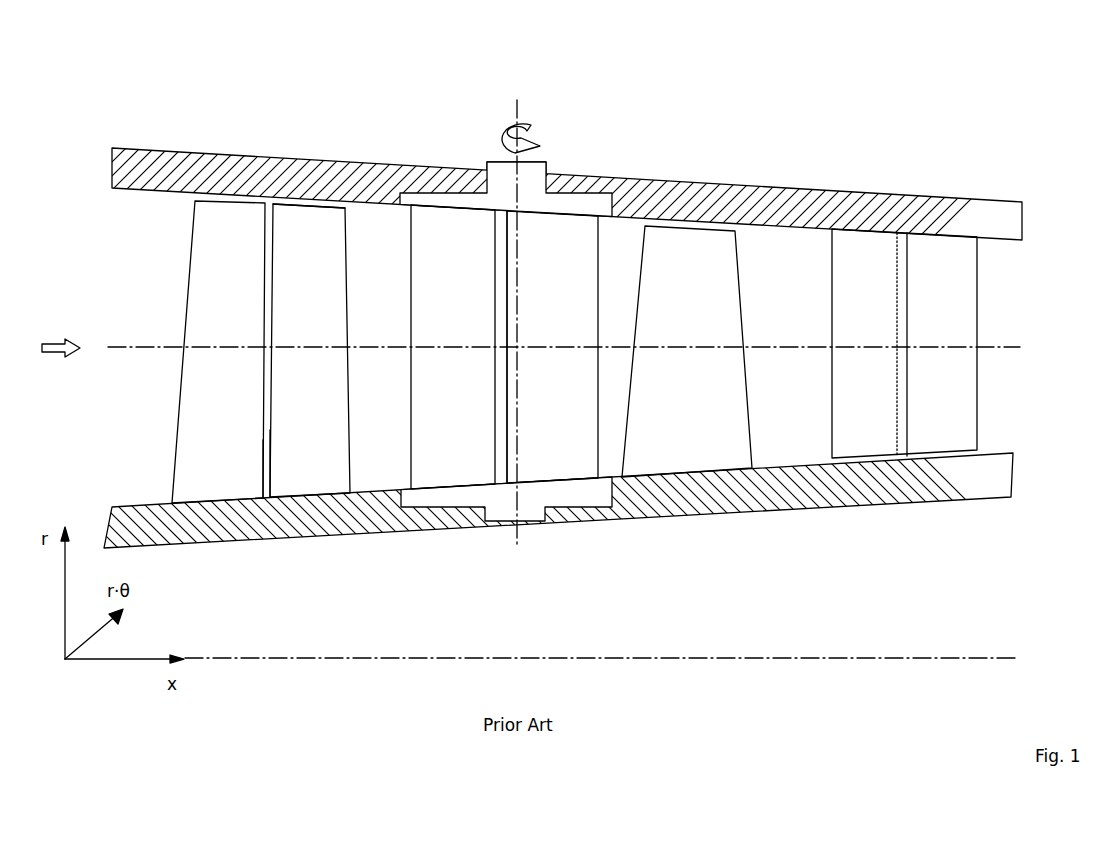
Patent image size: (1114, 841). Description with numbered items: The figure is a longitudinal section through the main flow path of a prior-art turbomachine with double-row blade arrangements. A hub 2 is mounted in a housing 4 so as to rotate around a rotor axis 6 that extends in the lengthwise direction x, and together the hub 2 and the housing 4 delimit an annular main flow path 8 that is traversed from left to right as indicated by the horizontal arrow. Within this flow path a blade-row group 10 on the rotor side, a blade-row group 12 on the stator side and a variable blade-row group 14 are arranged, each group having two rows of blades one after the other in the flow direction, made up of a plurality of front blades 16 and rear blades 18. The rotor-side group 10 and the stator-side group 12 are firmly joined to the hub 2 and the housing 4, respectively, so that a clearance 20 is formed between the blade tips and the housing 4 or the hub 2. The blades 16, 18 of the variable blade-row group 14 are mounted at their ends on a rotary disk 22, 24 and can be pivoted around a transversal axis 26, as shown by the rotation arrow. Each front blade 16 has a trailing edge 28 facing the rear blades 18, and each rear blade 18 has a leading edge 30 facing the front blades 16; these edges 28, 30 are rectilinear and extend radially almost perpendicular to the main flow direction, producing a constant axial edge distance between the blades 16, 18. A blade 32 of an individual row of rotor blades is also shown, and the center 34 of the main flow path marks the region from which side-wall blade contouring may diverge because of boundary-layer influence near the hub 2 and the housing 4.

The hub 2 is at (985, 477).
The housing 4 is at (1015, 218).
The rotor axis 6 is at (1006, 655).
The annular main flow path 8 is at (997, 397).
The blade-row group on the rotor side 10 is at (352, 208).
The blade-row group on the stator side 12 is at (984, 234).
The variable blade-row group 14 is at (606, 222).
The front blade 16 is at (230, 240).
The rear blade 18 is at (308, 232).
The clearance 20 is at (270, 202).
The rotary disk 22 is at (580, 492).
The rotary disk 24 is at (537, 178).
The transversal axis 26 is at (518, 112).
The trailing edge 28 is at (261, 450).
The leading edge 30 is at (268, 427).
The blade of an individual row of rotor blades 32 is at (744, 247).
The center of the main flow path 34 is at (992, 347).